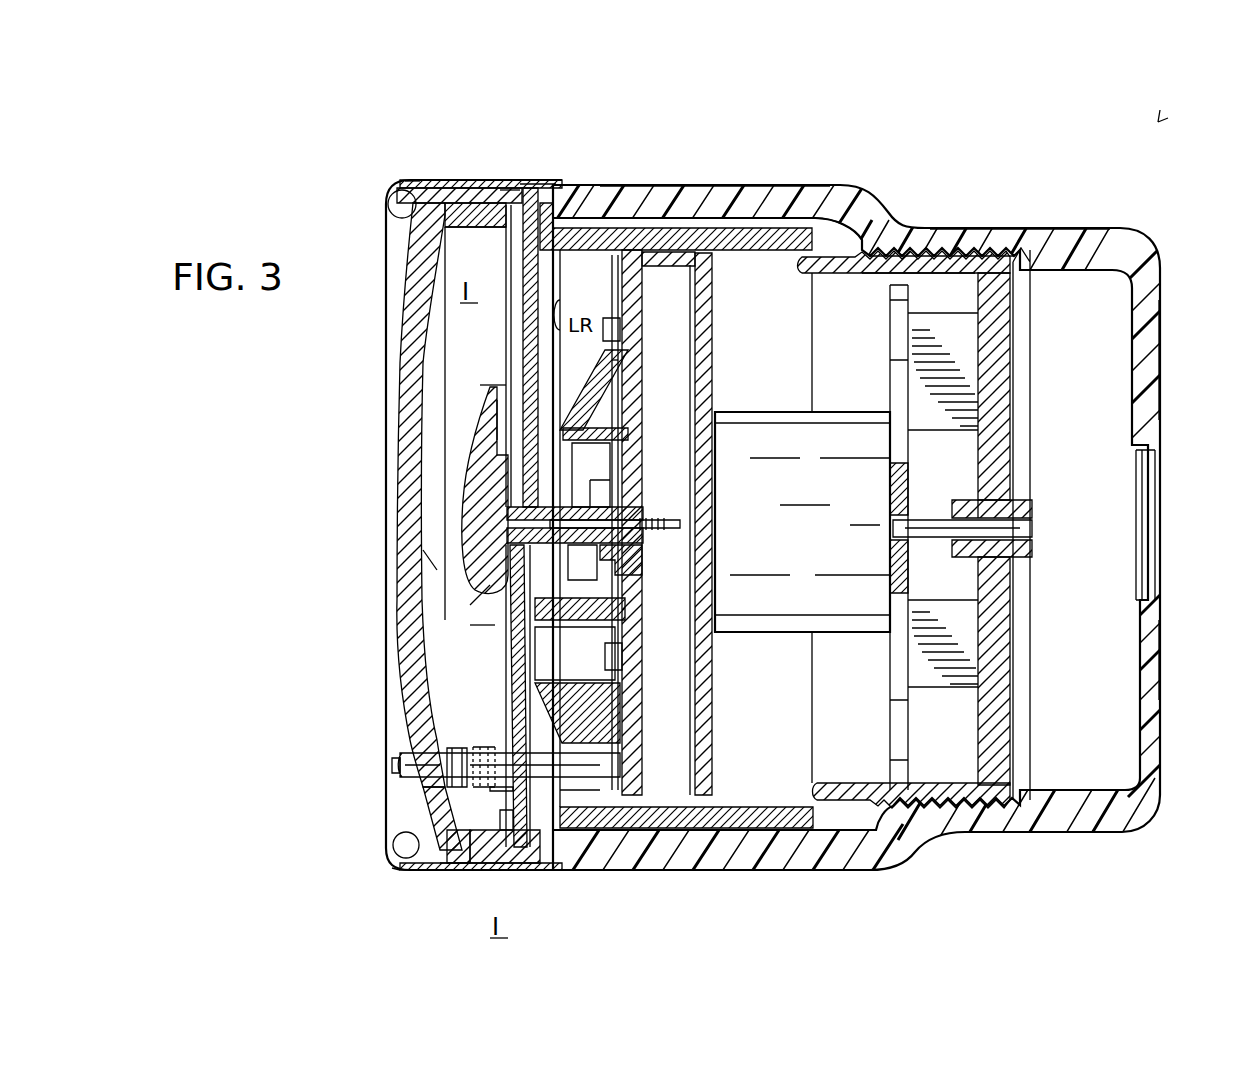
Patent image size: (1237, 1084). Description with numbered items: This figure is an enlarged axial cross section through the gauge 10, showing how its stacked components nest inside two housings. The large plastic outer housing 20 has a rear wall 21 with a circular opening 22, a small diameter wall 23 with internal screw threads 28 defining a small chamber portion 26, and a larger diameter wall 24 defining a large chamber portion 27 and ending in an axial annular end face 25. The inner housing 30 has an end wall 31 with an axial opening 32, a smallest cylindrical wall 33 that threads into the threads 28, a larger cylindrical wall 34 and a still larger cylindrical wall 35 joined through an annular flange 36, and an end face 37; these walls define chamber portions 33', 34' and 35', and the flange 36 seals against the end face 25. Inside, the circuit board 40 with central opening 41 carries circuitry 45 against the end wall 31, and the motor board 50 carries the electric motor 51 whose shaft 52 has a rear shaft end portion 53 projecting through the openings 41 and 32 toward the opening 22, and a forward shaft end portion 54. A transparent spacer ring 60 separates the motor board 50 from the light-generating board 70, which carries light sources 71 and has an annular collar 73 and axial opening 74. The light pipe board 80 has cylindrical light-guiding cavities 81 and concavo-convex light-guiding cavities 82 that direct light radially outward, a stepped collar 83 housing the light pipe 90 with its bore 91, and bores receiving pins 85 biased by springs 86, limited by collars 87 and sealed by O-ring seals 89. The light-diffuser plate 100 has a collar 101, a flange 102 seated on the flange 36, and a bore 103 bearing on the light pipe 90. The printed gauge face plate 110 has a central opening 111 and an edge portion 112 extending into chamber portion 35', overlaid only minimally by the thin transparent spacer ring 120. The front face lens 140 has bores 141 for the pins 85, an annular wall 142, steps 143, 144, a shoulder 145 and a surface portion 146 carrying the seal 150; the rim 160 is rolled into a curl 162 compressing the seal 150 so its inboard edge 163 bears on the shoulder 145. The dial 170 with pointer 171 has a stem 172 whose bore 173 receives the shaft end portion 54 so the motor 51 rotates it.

The gauge 10 is at (1158, 122).
The outer housing 20 is at (1164, 242).
The rear wall 21 is at (1160, 650).
The circular opening 22 is at (1150, 465).
The small diameter wall 23 is at (1040, 230).
The larger diameter wall 24 is at (690, 186).
The axial annular end face 25 is at (560, 190).
The small chamber portion 26 is at (1130, 360).
The large chamber portion 27 is at (855, 232).
The screw threads 28 is at (938, 246).
The inner housing 30 is at (1038, 392).
The end wall 31 is at (1015, 426).
The axial opening 32 is at (1035, 510).
The smaller cylindrical wall 33 is at (918, 288).
The chamber portion 33' is at (834, 342).
The larger cylindrical wall 34 is at (686, 488).
The chamber portion 34' is at (780, 707).
The still larger cylindrical wall 35 is at (520, 152).
The chamber portion 35' is at (481, 633).
The annular flange 36 is at (575, 205).
The axial annular end face 37 is at (420, 185).
The circuit board 40 is at (878, 444).
The central opening 41 is at (912, 515).
The circuitry 45 is at (940, 422).
The motor board 50 is at (724, 354).
The electric motor 51 is at (840, 520).
The rotatable shaft 52 is at (1008, 508).
The shaft end portion 53 is at (1030, 522).
The shaft end portion 54 is at (690, 530).
The spacer ring 60 is at (708, 296).
The light-generating board 70 is at (664, 406).
The light sources 71 is at (622, 338).
The annular collar 73 is at (627, 600).
The axial opening 74 is at (630, 568).
The light pipe board 80 is at (628, 290).
The cylindrical light-guiding cavities 81 is at (580, 666).
The concavo-convex light-guiding cavities 82 is at (640, 366).
The stepped collar 83 is at (618, 428).
The pin 85 is at (420, 762).
The spring 86 is at (478, 745).
The annular collar 87 is at (458, 740).
The O-ring seal 89 is at (430, 792).
The light pipe 90 is at (608, 462).
The axial bore 91 is at (490, 586).
The light-diffuser plate 100 is at (530, 184).
The axially inwardly directed collar 101 is at (604, 340).
The flange 102 is at (568, 878).
The axial bore 103 is at (503, 455).
The printed gauge face plate 110 is at (502, 357).
The axial central opening 111 is at (478, 492).
The circumferential edge portion 112 is at (520, 866).
The transparent spacer ring 120 is at (526, 186).
The front face lens 140 is at (375, 392).
The bore 141 is at (395, 766).
The annular wall 142 is at (455, 185).
The step 143 is at (462, 866).
The step 144 is at (447, 868).
The shoulder 145 is at (394, 838).
The outer peripheral surface portion 146 is at (388, 210).
The seal 150 is at (405, 180).
The rim 160 is at (396, 888).
The curl 162 is at (430, 212).
The inboard peripheral edge 163 is at (440, 230).
The dial 170 is at (434, 572).
The pointer 171 is at (500, 386).
The stem 172 is at (655, 515).
The bore 173 is at (589, 567).